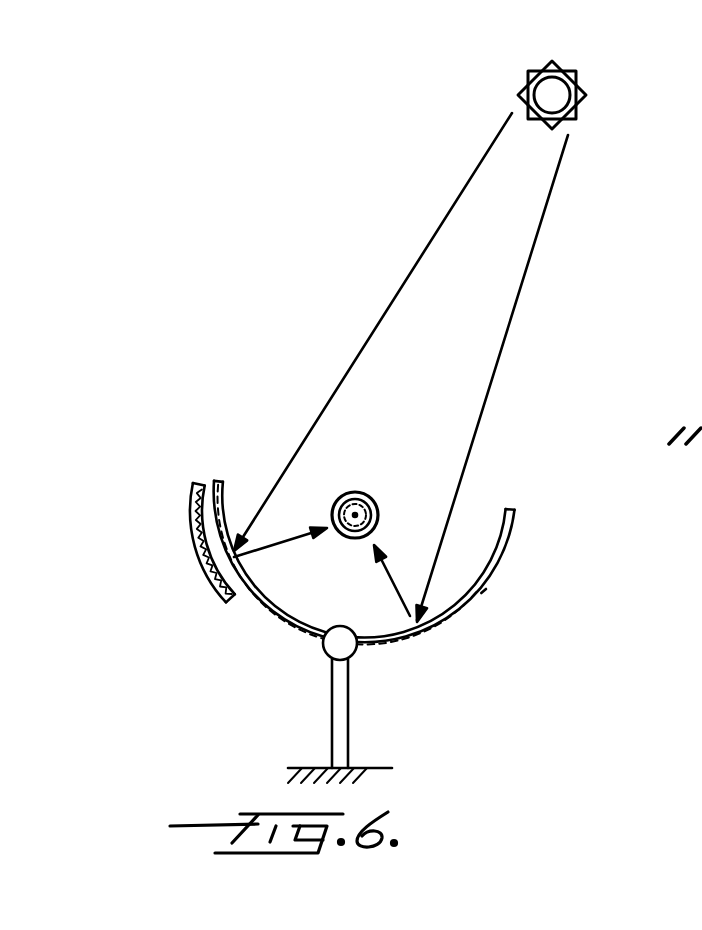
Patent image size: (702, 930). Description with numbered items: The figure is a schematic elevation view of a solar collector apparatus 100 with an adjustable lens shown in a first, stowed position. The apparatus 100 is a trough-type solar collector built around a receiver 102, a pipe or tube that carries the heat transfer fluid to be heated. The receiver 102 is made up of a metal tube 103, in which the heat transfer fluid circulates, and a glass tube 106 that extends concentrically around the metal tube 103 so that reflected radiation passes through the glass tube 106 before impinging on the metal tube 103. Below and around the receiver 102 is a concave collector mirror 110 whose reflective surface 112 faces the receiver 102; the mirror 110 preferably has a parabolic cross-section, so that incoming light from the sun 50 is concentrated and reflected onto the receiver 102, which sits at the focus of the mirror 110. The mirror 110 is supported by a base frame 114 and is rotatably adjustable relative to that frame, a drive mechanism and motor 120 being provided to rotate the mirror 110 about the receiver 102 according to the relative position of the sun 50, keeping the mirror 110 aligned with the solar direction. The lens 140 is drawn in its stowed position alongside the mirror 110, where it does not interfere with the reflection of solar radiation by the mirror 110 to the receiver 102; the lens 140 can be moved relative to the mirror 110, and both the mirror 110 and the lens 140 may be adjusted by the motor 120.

The sun 50 is at (578, 90).
The apparatus 100 is at (236, 443).
The receiver 102 is at (379, 462).
The metal tube 103 is at (343, 490).
The glass tube 106 is at (405, 488).
The collector mirror 110 is at (270, 640).
The reflective surface 112 is at (255, 600).
The base frame 114 is at (343, 725).
The drive mechanism and motor 120 is at (347, 652).
The lens 140 is at (190, 523).